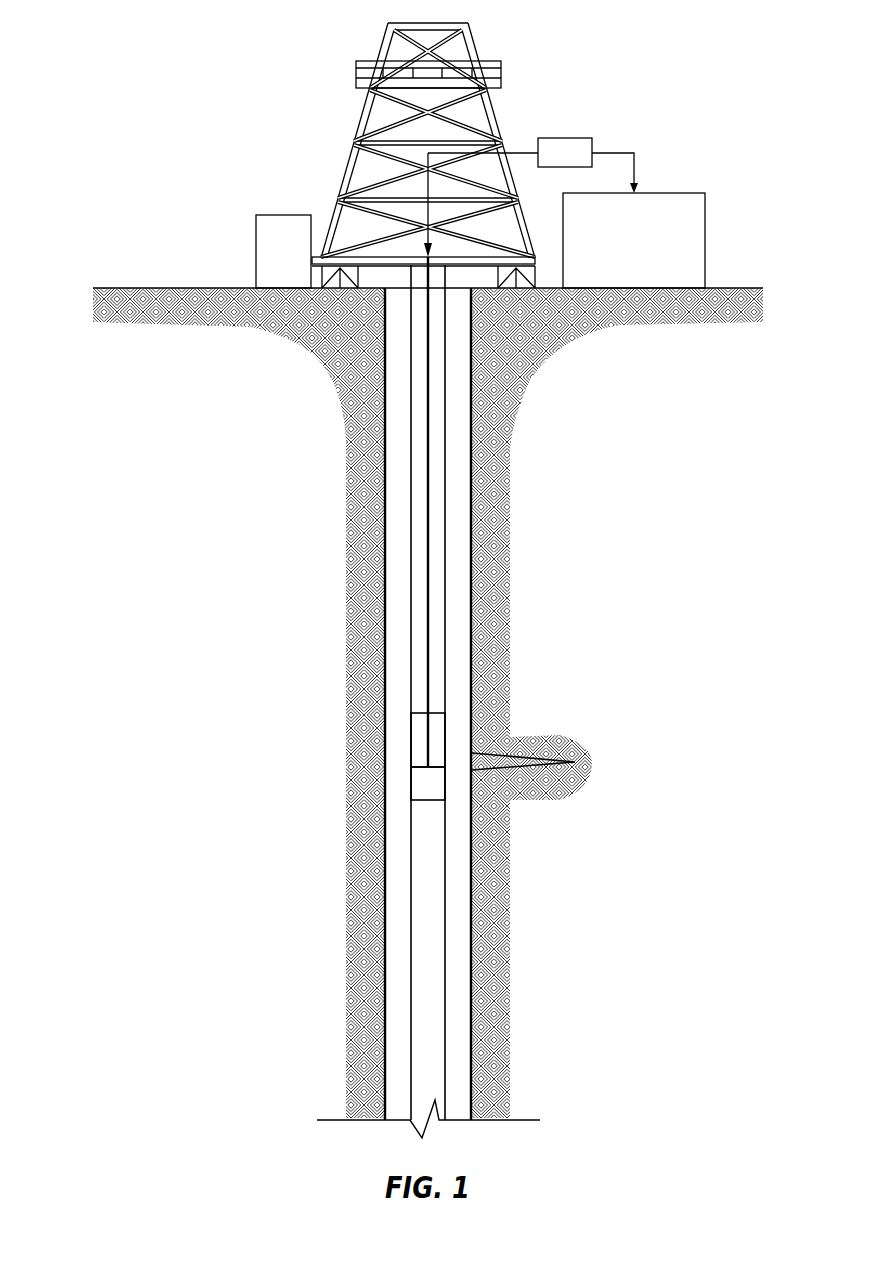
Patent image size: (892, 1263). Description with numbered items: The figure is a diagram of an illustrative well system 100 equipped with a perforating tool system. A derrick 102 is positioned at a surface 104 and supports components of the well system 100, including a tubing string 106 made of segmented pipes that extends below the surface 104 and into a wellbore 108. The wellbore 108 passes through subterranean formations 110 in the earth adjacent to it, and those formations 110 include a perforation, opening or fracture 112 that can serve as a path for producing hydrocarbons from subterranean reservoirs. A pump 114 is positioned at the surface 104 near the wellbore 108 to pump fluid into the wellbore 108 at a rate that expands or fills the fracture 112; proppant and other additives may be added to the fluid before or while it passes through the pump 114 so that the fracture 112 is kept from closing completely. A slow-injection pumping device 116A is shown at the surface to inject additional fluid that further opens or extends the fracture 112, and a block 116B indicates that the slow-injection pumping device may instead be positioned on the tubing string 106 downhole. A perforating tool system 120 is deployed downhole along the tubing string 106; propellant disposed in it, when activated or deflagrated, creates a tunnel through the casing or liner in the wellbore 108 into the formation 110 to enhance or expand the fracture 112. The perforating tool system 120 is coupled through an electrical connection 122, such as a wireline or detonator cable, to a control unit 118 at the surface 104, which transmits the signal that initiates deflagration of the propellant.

The well system 100 is at (190, 60).
The derrick 102 is at (358, 125).
The surface 104 is at (733, 288).
The tubing string 106 is at (411, 467).
The wellbore 108 is at (472, 700).
The subterranean formations 110 is at (495, 377).
The fracture 112 is at (573, 762).
The pump 114 is at (665, 192).
The slow-injection pumping device 116A is at (565, 138).
The slow-injection pumping device 116B is at (425, 745).
The control unit 118 is at (256, 252).
The perforating tool system 120 is at (428, 792).
The electrical connection 122 is at (427, 385).